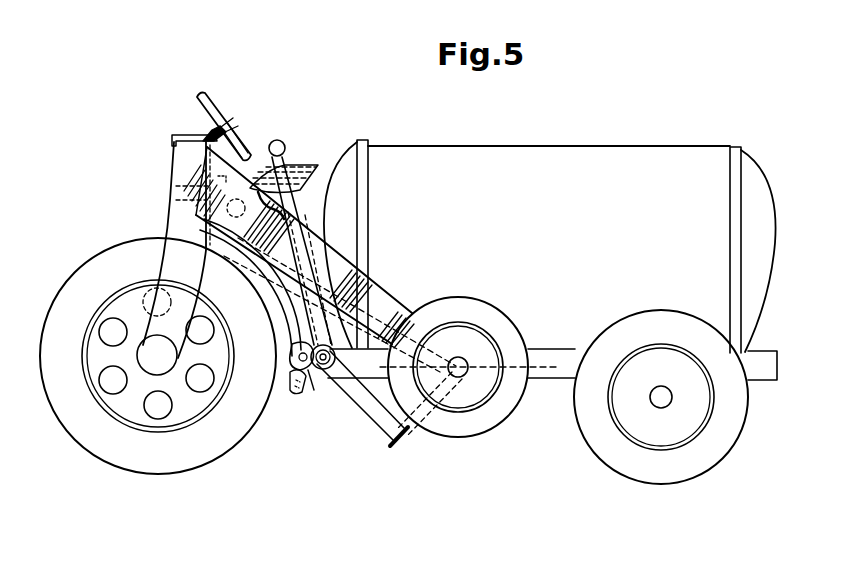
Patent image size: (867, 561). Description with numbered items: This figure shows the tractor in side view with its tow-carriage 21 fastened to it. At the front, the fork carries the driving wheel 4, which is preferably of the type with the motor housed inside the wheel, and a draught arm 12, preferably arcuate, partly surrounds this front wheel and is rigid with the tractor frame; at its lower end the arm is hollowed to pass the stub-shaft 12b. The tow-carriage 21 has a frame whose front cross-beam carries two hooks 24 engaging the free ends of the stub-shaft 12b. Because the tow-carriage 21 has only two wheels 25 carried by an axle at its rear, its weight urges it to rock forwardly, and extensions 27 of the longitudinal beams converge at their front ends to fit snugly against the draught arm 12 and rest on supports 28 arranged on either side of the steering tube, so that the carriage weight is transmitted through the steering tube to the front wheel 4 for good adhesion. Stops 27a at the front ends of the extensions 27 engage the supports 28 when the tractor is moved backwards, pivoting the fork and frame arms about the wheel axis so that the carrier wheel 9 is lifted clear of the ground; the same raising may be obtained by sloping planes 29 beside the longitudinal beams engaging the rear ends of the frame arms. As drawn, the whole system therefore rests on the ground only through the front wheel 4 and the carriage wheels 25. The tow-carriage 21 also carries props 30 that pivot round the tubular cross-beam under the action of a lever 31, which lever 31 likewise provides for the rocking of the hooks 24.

The driving wheel 4 is at (120, 262).
The carrier wheel 9 is at (488, 416).
The draught arm 12 is at (292, 391).
The stub-shaft 12b is at (313, 392).
The tow-carriage 21 is at (776, 359).
The hook 24 is at (296, 357).
The tow-carriage wheel 25 is at (740, 426).
The extension 27 is at (283, 276).
The stop 27a is at (228, 212).
The support 28 is at (208, 192).
The sloping plane 29 is at (409, 430).
The prop 30 is at (377, 418).
The lever 31 is at (284, 166).